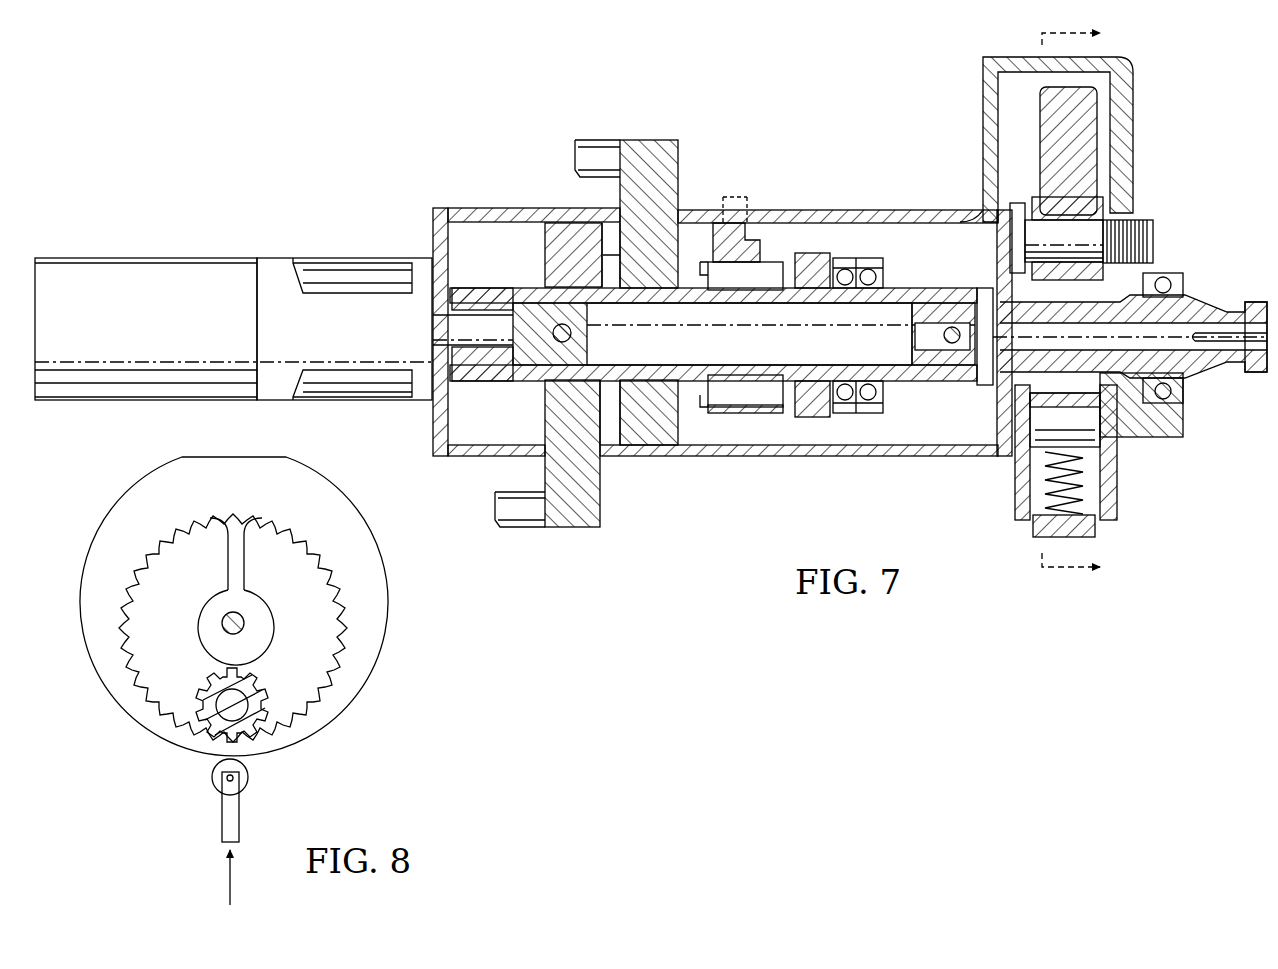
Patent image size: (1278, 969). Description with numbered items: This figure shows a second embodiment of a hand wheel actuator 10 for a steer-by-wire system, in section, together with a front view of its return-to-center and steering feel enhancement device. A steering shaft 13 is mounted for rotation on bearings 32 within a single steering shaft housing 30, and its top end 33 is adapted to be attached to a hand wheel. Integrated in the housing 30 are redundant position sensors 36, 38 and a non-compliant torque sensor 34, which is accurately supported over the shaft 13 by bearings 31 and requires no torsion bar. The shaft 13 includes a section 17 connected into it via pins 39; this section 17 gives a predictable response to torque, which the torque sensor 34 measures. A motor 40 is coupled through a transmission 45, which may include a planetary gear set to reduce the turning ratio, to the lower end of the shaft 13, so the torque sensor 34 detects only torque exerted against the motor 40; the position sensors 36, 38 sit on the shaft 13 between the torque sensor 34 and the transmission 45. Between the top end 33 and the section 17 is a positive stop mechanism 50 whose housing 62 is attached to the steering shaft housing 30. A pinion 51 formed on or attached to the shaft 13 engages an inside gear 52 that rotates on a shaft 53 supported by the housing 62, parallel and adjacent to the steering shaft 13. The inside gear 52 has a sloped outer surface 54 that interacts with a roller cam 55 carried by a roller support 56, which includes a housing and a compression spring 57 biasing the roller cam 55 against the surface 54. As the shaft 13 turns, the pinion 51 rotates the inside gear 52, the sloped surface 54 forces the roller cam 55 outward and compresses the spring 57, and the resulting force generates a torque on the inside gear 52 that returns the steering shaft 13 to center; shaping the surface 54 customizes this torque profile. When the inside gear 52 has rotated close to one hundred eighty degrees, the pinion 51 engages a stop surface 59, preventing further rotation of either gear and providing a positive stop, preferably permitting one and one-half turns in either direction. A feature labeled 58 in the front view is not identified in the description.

In FIG. 7, the hand wheel actuator 10 is at (400, 118).
In FIG. 7, the steering shaft 13 is at (907, 290).
In FIG. 8, the steering shaft 13 is at (225, 703).
In FIG. 7, the section 17 is at (690, 287).
In FIG. 7, the steering shaft housing 30 is at (917, 457).
In FIG. 7, the bearings 31 is at (860, 413).
In FIG. 7, the bearings 32 is at (1105, 307).
In FIG. 7, the top end 33 is at (1257, 373).
In FIG. 7, the non-compliant torque sensor 34 is at (748, 388).
In FIG. 7, the position sensor 36 is at (548, 527).
In FIG. 7, the position sensor 38 is at (663, 433).
In FIG. 7, the pins 39 is at (556, 326).
In FIG. 7, the motor 40 is at (163, 331).
In FIG. 7, the transmission 45 is at (320, 243).
In FIG. 7, the positive stop mechanism 50 is at (960, 130).
In FIG. 8, the positive stop mechanism 50 is at (127, 790).
In FIG. 7, the pinion 51 is at (1140, 285).
In FIG. 8, the pinion 51 is at (267, 717).
In FIG. 7, the inside gear 52 is at (1097, 117).
In FIG. 8, the inside gear 52 is at (105, 540).
In FIG. 7, the shaft 53 is at (1090, 228).
In FIG. 8, the shaft 53 is at (225, 630).
In FIG. 8, the sloped outer surface 54 is at (133, 486).
In FIG. 7, the roller cam 55 is at (1088, 440).
In FIG. 8, the roller cam 55 is at (213, 790).
In FIG. 8, the roller support 56 is at (237, 803).
In FIG. 7, the compression spring 57 is at (1078, 493).
In FIG. 8, the force arrow 58 is at (230, 868).
In FIG. 8, the stop surface 59 is at (243, 557).
In FIG. 7, the housing 62 is at (1140, 75).